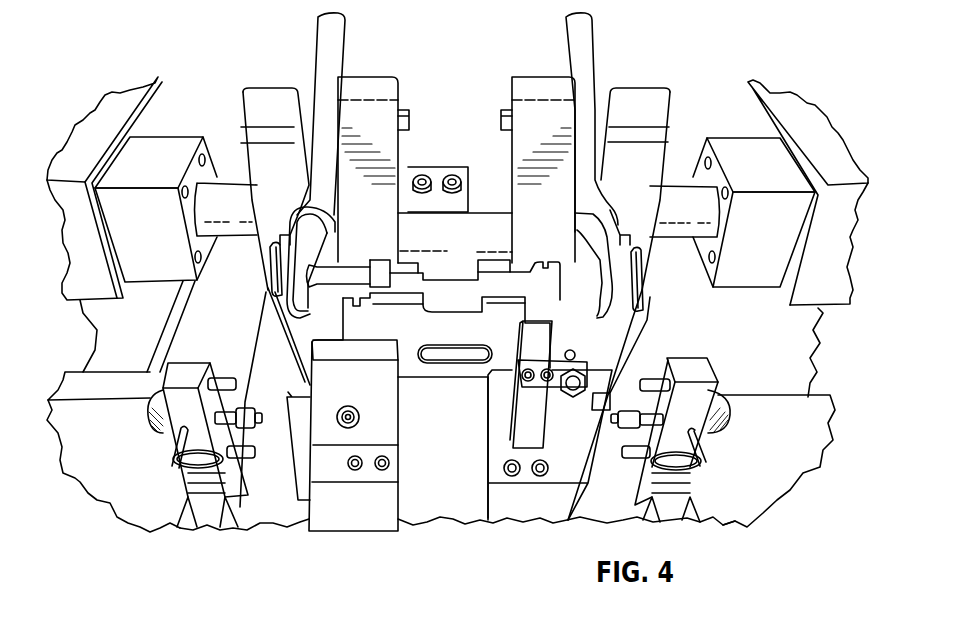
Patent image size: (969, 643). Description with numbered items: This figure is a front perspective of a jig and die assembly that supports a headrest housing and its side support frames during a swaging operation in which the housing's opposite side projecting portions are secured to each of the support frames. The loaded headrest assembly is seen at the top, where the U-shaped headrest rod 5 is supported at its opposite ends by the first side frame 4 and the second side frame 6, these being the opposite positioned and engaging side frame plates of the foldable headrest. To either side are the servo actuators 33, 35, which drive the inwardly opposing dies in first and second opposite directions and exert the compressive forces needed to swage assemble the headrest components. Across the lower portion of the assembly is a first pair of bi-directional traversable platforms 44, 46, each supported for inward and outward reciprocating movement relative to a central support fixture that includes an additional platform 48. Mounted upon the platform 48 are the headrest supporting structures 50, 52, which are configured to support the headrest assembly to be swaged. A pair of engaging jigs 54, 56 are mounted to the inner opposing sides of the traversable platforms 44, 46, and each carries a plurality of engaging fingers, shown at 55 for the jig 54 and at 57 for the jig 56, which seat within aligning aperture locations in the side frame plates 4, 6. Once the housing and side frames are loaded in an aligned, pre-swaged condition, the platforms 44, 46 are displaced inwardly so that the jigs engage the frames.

The first side frame 4 is at (270, 290).
The headrest rod 5 is at (323, 85).
The second side frame 6 is at (642, 292).
The servo actuator 33 is at (176, 254).
The servo actuator 35 is at (732, 212).
The bi-directional traversable platform 44 is at (113, 452).
The bi-directional traversable platform 46 is at (776, 417).
The additional platform 48 is at (445, 431).
The headrest supporting structure 50 is at (342, 435).
The headrest supporting structure 52 is at (550, 420).
The engaging jig 54 is at (198, 445).
The engaging fingers 55 is at (232, 378).
The engaging jig 56 is at (682, 440).
The engaging fingers 57 is at (648, 380).